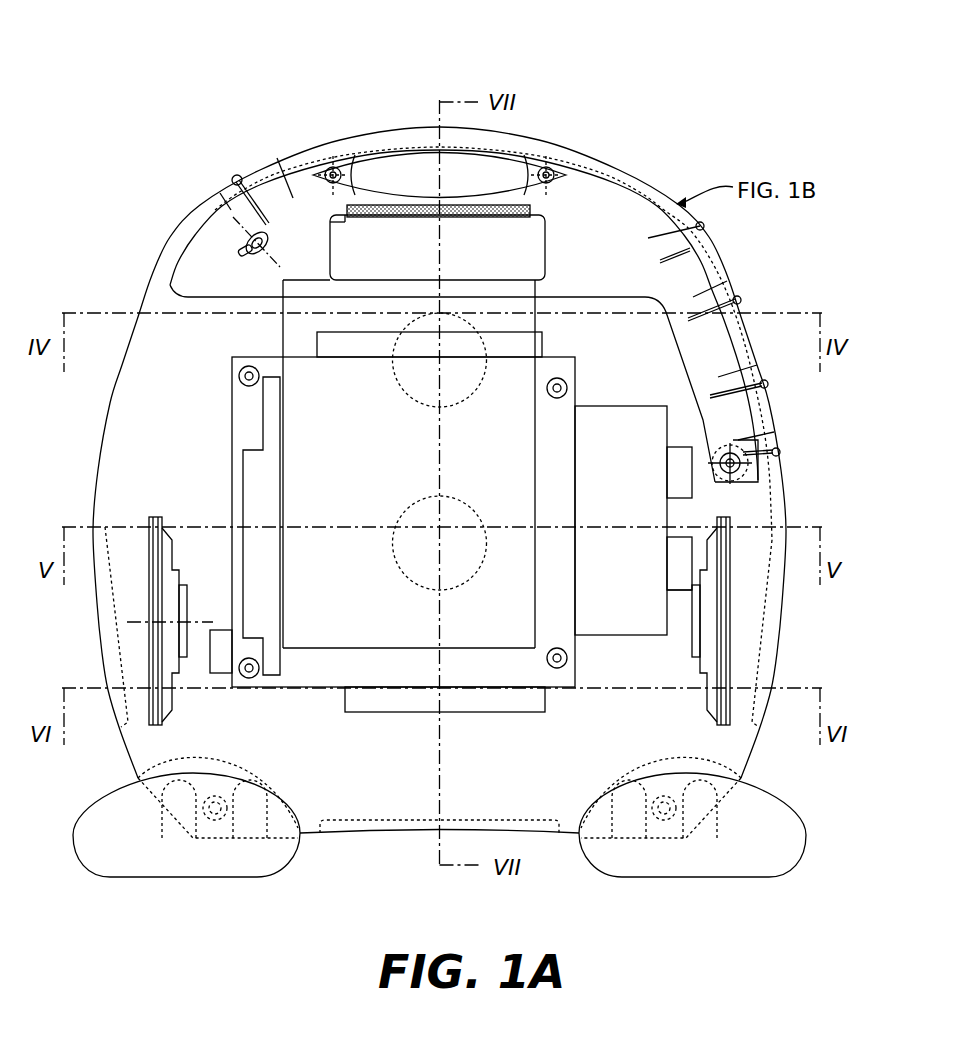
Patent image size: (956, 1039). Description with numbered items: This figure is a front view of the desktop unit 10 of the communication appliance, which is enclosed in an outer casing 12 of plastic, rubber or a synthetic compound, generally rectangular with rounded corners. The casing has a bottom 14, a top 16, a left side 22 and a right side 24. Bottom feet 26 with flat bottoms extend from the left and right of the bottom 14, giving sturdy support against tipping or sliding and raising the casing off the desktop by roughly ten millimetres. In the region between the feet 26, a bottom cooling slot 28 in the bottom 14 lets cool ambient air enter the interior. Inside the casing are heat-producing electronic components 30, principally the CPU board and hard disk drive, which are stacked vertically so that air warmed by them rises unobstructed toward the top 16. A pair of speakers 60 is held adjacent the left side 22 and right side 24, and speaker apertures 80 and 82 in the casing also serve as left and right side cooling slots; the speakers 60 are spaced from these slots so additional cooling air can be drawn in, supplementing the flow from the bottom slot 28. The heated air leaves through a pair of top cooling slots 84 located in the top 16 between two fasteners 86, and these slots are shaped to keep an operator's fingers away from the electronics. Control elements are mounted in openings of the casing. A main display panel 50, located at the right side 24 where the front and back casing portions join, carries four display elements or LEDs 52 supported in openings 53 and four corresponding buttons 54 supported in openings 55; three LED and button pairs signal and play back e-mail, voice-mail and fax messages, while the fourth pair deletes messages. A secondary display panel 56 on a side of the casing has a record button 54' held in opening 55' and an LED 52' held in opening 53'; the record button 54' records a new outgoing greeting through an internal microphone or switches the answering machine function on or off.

The desktop unit 10 is at (278, 74).
The outer casing 12 is at (110, 405).
The bottom of the outer casing 14 is at (383, 835).
The top of the outer casing 16 is at (410, 125).
The left side of the outer casing 22 is at (100, 468).
The right side of the outer casing 24 is at (786, 510).
The bottom feet 26 is at (188, 865).
The bottom cooling slot 28 is at (548, 835).
The heat-producing electronic components 30 is at (530, 372).
The main display panel 50 is at (770, 392).
The display elements (LEDs) 52 is at (810, 452).
The openings 53 is at (764, 466).
The buttons 54 is at (793, 434).
The openings 55 is at (772, 418).
The display element (LED) 52' is at (207, 162).
The opening 53' is at (201, 191).
The record button 54' is at (260, 183).
The opening 55' is at (300, 156).
The secondary display panel 56 is at (250, 160).
The speaker 60 is at (148, 655).
The speaker aperture / left side cooling slot 80 is at (97, 605).
The speaker aperture / right side cooling slot 82 is at (781, 636).
The top cooling slot 84 is at (503, 160).
The fasteners 86 is at (567, 163).